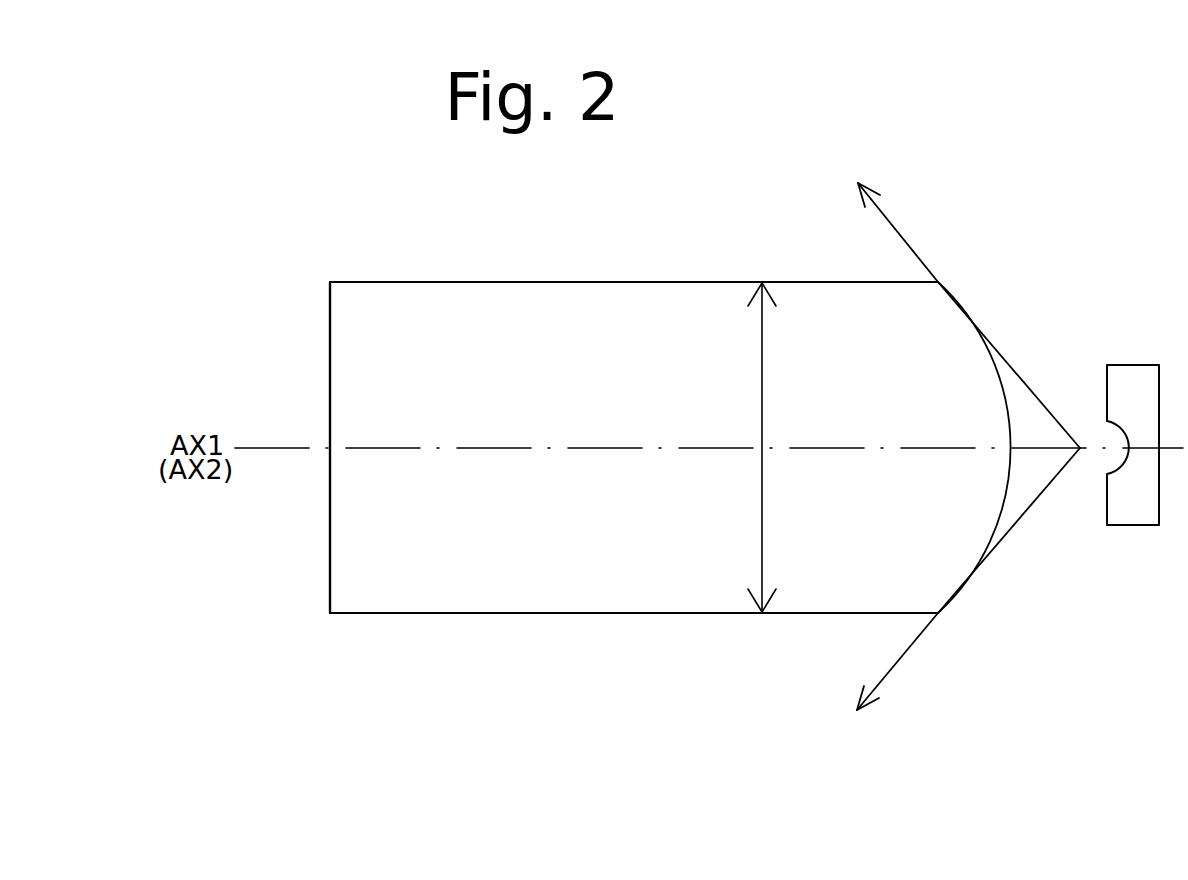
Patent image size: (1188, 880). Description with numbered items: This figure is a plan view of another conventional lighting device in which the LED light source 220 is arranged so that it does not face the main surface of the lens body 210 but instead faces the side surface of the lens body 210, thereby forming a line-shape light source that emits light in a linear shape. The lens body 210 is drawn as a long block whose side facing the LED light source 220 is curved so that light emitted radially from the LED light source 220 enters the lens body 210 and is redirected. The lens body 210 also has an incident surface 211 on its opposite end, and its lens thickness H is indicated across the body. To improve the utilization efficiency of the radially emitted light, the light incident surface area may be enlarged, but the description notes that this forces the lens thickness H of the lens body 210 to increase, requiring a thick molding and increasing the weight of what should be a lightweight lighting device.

The lens body 210 is at (631, 282).
The incident surface of lens 211 is at (330, 566).
The LED light source 220 is at (1133, 373).